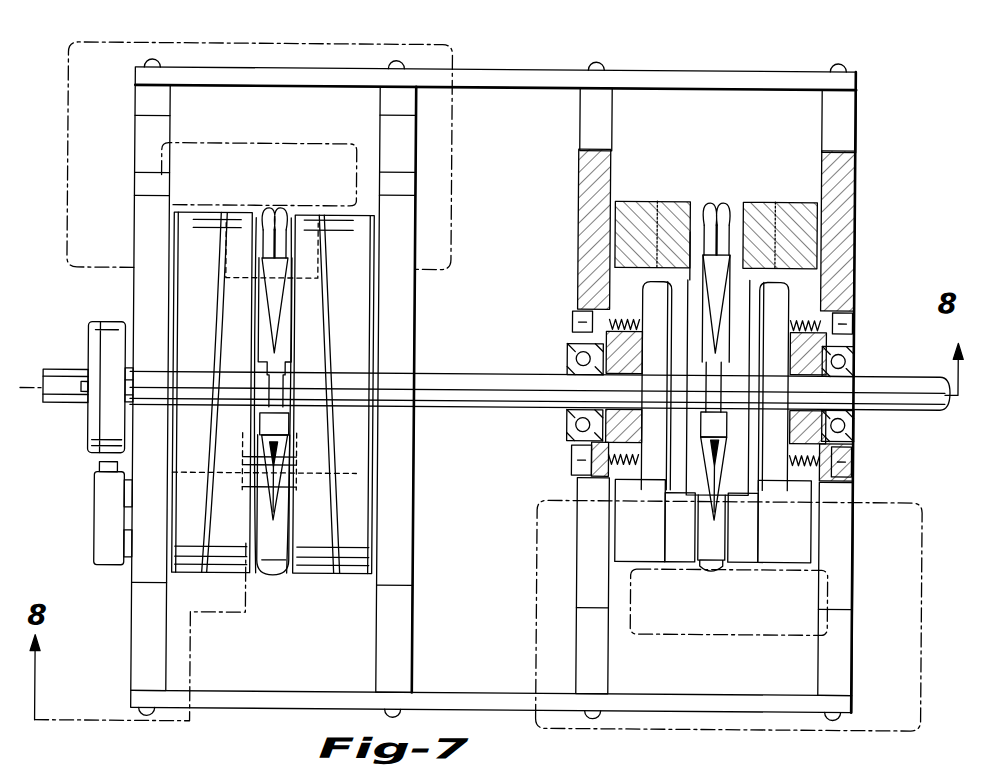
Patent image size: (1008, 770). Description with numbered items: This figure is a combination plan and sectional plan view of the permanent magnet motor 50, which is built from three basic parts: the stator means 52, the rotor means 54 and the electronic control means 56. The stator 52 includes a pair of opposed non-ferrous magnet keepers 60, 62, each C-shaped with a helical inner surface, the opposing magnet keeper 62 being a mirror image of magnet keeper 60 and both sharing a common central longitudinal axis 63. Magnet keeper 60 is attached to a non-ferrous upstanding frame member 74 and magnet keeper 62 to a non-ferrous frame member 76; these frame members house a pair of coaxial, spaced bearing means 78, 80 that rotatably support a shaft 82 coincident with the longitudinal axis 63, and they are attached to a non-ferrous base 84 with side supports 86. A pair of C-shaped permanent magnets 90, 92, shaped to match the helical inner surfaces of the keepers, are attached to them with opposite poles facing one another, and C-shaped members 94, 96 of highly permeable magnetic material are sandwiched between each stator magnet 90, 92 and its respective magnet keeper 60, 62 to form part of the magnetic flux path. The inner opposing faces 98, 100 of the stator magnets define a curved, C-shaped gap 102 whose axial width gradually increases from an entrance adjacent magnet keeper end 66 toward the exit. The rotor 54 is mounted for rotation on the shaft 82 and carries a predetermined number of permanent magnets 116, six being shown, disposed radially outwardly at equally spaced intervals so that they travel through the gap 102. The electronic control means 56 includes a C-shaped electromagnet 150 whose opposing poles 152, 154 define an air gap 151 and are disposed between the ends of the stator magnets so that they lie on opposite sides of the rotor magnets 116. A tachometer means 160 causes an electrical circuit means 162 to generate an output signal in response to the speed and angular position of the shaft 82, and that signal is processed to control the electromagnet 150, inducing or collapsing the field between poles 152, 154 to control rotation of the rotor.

The permanent magnet motor 50 is at (557, 42).
The stator means 52 is at (189, 201).
The rotor means 54 is at (276, 590).
The electronic control means 56 is at (280, 39).
The magnet keeper 60 is at (358, 377).
The opposing magnet keeper 62 is at (187, 355).
The central longitudinal axis 63 is at (44, 385).
The second end 66 is at (312, 246).
The upstanding frame member 74 is at (399, 615).
The frame member 76 is at (152, 617).
The bearing means 78 is at (567, 425).
The bearing means 80 is at (858, 360).
The shaft 82 is at (512, 385).
The base 84 is at (472, 538).
The side supports 86 is at (533, 80).
The C-shaped permanent magnet 90 is at (323, 319).
The C-shaped permanent magnet 92 is at (243, 319).
The C-shaped member of highly permeable magnetic material 94 is at (330, 375).
The C-shaped member of highly permeable magnetic material 96 is at (213, 353).
The inner opposing face 98 is at (290, 415).
The inner opposing face 100 is at (258, 421).
The curved C-shaped gap 102 is at (246, 555).
The permanent magnets 116 is at (272, 538).
The C-shaped electromagnet 150 is at (65, 189).
The air gap 151 is at (261, 196).
The opposing pole 152 is at (284, 212).
The opposing pole 154 is at (264, 212).
The tachometer means 160 is at (97, 333).
The electrical circuit means 162 is at (105, 512).